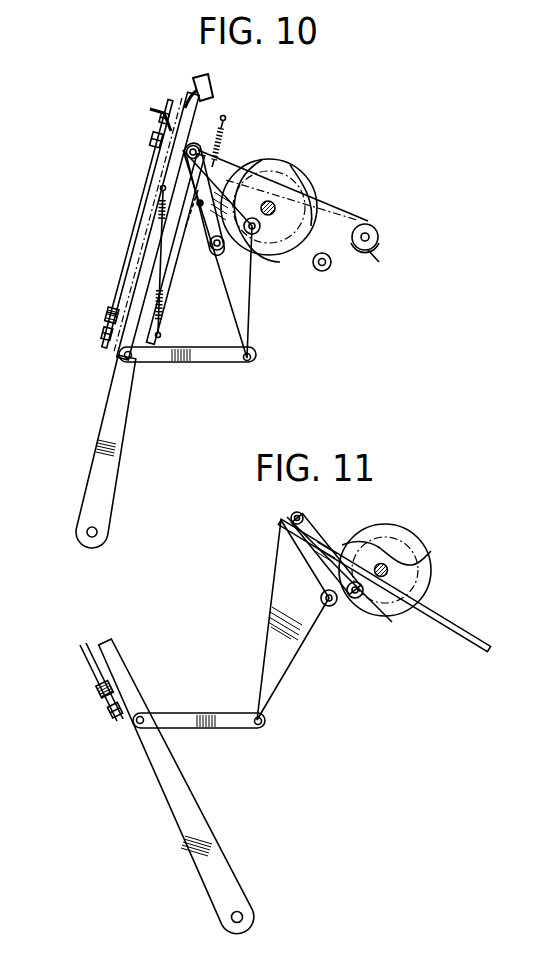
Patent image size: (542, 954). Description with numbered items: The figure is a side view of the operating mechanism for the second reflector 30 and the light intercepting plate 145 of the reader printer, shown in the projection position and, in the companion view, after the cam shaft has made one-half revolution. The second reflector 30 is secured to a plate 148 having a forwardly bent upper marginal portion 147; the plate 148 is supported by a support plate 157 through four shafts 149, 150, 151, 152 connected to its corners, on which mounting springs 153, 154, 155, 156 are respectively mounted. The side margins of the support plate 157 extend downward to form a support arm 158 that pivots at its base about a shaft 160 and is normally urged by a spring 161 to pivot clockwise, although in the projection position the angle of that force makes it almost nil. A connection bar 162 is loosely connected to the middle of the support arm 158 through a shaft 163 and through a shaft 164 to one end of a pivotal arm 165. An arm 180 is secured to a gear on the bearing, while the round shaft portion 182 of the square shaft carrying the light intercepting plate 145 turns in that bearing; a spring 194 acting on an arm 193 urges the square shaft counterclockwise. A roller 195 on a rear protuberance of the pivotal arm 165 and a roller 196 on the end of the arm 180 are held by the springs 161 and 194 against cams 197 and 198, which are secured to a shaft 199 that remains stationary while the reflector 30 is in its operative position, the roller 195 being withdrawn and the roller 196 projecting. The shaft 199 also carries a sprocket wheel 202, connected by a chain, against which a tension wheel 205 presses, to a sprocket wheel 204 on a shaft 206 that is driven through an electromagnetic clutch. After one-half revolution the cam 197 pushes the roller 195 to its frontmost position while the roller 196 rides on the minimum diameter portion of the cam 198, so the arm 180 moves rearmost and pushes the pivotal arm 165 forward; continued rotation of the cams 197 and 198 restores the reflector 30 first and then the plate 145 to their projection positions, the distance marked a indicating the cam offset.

In FIG. 10, the second reflector 30 is at (137, 209).
In FIG. 11, the second reflector 30 is at (89, 683).
In FIG. 10, the light intercepting plate 145 is at (172, 250).
In FIG. 11, the light intercepting plate 145 is at (440, 625).
In FIG. 10, the forwardly bent upper marginal portion 147 is at (157, 109).
In FIG. 10, the plate 148 is at (135, 262).
In FIG. 11, the plate 148 is at (97, 668).
In FIG. 10, the shaft 149 is at (160, 138).
In FIG. 10, the shaft 150 is at (117, 320).
In FIG. 11, the shaft 150 is at (102, 696).
In FIG. 10, the shaft 151 is at (156, 139).
In FIG. 10, the shaft 152 is at (112, 313).
In FIG. 11, the shaft 152 is at (107, 694).
In FIG. 10, the mounting spring 153 is at (156, 116).
In FIG. 10, the mounting spring 154 is at (113, 334).
In FIG. 11, the mounting spring 154 is at (117, 722).
In FIG. 10, the mounting spring 155 is at (164, 118).
In FIG. 10, the mounting spring 156 is at (107, 333).
In FIG. 11, the mounting spring 156 is at (115, 710).
In FIG. 10, the support plate 157 is at (150, 242).
In FIG. 10, the support arm 158 is at (120, 431).
In FIG. 11, the support arm 158 is at (197, 812).
In FIG. 10, the shaft 160 is at (96, 533).
In FIG. 11, the shaft 160 is at (240, 910).
In FIG. 10, the spring 161 is at (163, 310).
In FIG. 10, the connection bar 162 is at (196, 362).
In FIG. 11, the connection bar 162 is at (191, 726).
In FIG. 10, the shaft 163 is at (131, 360).
In FIG. 11, the shaft 163 is at (141, 715).
In FIG. 10, the shaft 164 is at (252, 358).
In FIG. 11, the shaft 164 is at (262, 721).
In FIG. 10, the pivotal arm 165 is at (244, 320).
In FIG. 11, the pivotal arm 165 is at (288, 658).
In FIG. 10, the arm 180 is at (206, 200).
In FIG. 11, the arm 180 is at (332, 550).
In FIG. 10, the round shaft portion 182 is at (194, 145).
In FIG. 11, the round shaft portion 182 is at (298, 512).
In FIG. 10, the arm 193 is at (185, 229).
In FIG. 10, the spring 194 is at (226, 124).
In FIG. 10, the roller 195 is at (253, 235).
In FIG. 11, the roller 195 is at (329, 607).
In FIG. 10, the roller 196 is at (216, 251).
In FIG. 11, the roller 196 is at (356, 599).
In FIG. 10, the cam 197 is at (308, 196).
In FIG. 11, the cam 197 is at (388, 622).
In FIG. 10, the cam 198 is at (283, 256).
In FIG. 11, the cam 198 is at (402, 525).
In FIG. 10, the shaft 199 is at (271, 200).
In FIG. 11, the shaft 199 is at (431, 551).
In FIG. 10, the sprocket wheel 202 is at (320, 209).
In FIG. 10, the sprocket wheel 204 is at (378, 240).
In FIG. 10, the tension wheel 205 is at (330, 268).
In FIG. 10, the shaft 206 is at (367, 233).
In FIG. 10, the angle a is at (381, 263).